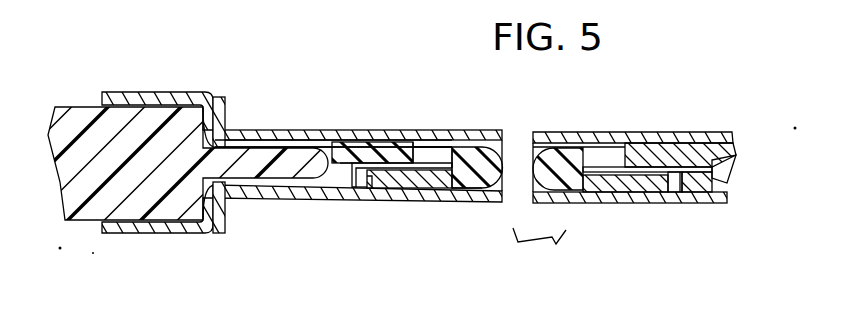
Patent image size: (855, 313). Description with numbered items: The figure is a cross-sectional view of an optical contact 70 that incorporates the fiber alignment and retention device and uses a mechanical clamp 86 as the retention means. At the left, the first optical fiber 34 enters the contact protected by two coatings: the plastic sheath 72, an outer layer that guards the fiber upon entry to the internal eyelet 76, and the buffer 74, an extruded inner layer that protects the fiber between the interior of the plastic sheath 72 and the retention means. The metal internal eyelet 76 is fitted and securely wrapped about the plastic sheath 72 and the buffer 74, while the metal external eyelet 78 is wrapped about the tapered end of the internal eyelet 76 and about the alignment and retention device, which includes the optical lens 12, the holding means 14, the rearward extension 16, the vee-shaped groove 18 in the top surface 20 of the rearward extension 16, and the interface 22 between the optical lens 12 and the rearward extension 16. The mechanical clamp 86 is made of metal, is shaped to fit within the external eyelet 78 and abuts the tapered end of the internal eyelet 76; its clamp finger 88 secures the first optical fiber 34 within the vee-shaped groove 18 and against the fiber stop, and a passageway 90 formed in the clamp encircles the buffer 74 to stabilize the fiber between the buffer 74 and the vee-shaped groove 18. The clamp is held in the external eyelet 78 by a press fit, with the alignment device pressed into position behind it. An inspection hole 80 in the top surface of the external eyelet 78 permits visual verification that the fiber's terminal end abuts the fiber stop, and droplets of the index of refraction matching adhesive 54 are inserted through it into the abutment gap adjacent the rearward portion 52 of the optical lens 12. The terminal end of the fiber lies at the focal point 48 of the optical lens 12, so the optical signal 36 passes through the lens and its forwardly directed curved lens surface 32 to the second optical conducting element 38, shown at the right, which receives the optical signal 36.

The optical contact 70 is at (262, 53).
The plastic sheath 72 is at (84, 122).
The buffer 74 is at (262, 162).
The internal eyelet 76 is at (145, 92).
The external eyelet 78 is at (248, 128).
The mechanical clamp 86 is at (340, 134).
The clamp finger 88 is at (345, 133).
The passageway 90 is at (257, 200).
The optical signal 36 is at (405, 150).
The focal point 48 is at (430, 160).
The index of refraction matching adhesive 54 is at (440, 133).
The rearward portion 52 is at (445, 146).
The inspection hole 80 is at (450, 134).
The optical lens 12 is at (487, 150).
The forwardly directed curved lens surface 32 is at (512, 140).
The second optical conducting element 38 is at (577, 133).
The vee-shaped groove 18 is at (353, 187).
The holding means 14 is at (360, 198).
The first optical fiber 34 is at (415, 190).
The rearward extension 16 is at (420, 200).
The top surface 20 is at (455, 200).
The interface 22 is at (480, 198).